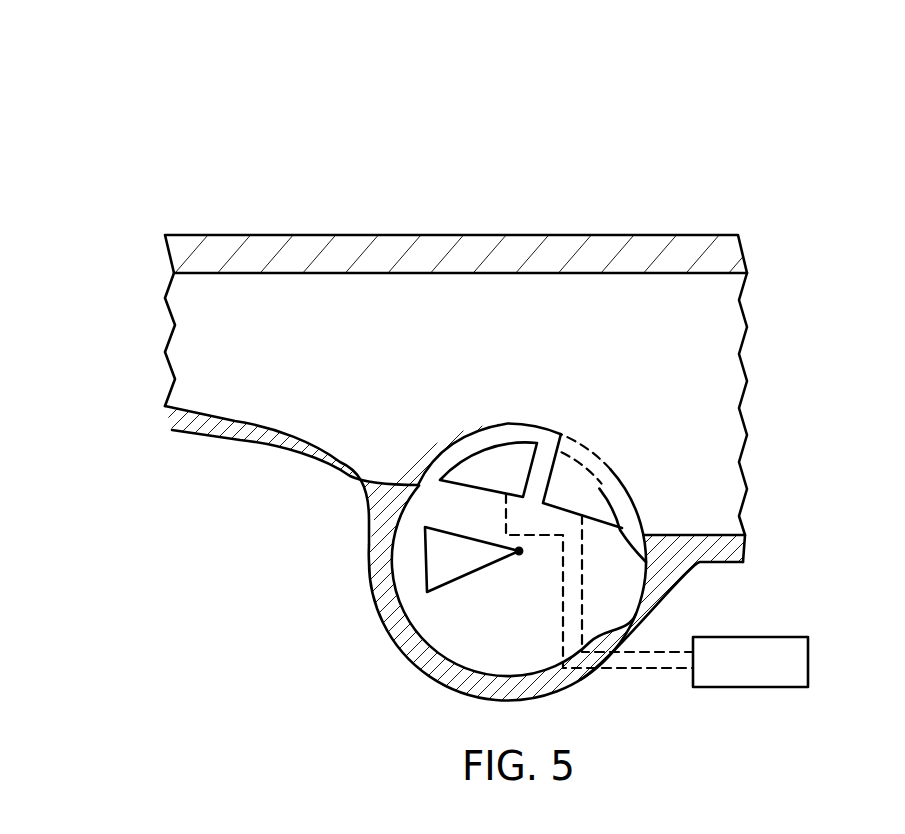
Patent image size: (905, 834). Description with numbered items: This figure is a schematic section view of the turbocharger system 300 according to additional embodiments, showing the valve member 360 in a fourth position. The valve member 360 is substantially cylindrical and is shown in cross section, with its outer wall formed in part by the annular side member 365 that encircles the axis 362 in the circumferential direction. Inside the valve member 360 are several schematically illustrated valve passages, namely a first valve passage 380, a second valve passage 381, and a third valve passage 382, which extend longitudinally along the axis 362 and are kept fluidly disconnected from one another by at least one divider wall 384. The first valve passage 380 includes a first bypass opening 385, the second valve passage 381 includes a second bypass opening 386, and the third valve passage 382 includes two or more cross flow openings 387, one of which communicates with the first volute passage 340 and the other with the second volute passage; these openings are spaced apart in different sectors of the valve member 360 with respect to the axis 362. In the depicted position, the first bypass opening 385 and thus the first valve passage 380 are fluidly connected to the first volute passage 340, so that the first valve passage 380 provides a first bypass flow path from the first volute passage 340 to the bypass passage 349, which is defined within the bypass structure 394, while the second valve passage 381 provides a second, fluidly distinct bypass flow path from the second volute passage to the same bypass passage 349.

The turbocharger system 300 is at (115, 130).
The first volute passage 340 is at (718, 379).
The bypass passage 349 is at (752, 688).
The valve member 360 is at (433, 441).
The axis 362 is at (519, 556).
The side member 365 is at (640, 518).
The first valve passage 380 is at (611, 503).
The second valve passage 381 is at (521, 481).
The third valve passage 382 is at (482, 567).
The divider wall 384 is at (452, 498).
The first bypass opening 385 is at (603, 481).
The second bypass opening 386 is at (577, 438).
The cross flow openings 387 is at (426, 568).
The bypass structure 394 is at (755, 637).